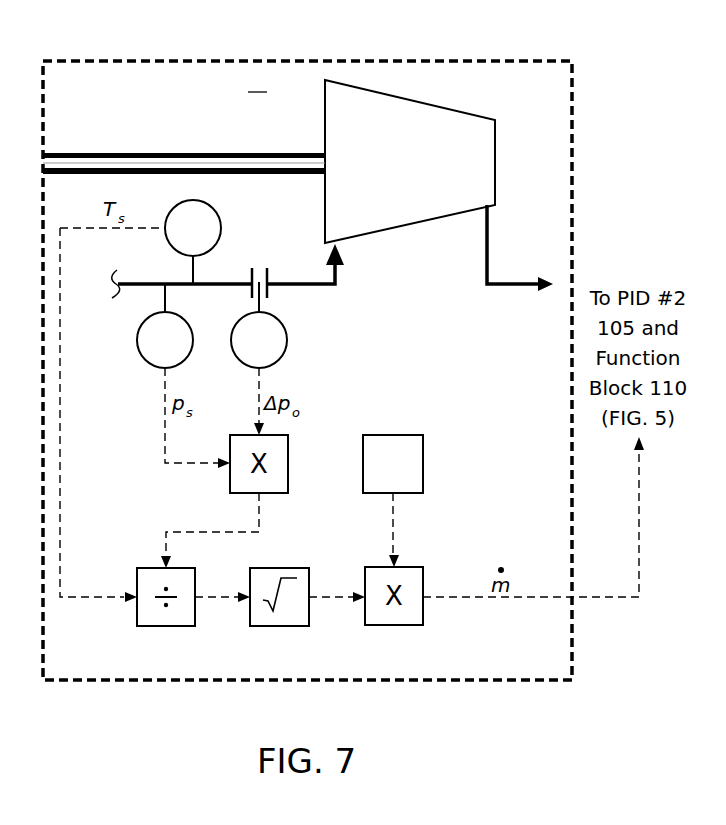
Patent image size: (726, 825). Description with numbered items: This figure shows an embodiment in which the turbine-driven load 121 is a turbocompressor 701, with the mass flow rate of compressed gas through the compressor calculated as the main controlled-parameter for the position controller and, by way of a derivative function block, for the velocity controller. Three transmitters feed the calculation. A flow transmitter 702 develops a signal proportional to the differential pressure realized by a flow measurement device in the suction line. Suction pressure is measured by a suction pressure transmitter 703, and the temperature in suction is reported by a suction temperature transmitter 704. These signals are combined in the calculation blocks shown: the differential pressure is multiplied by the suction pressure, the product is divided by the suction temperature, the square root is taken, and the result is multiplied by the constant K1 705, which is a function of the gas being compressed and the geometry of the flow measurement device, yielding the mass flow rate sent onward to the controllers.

The load 121 is at (305, 60).
The turbocompressor 701 is at (320, 118).
The flow transmitter 702 is at (290, 343).
The suction pressure transmitter 703 is at (137, 341).
The suction temperature transmitter 704 is at (222, 231).
The constant K1 705 is at (393, 434).